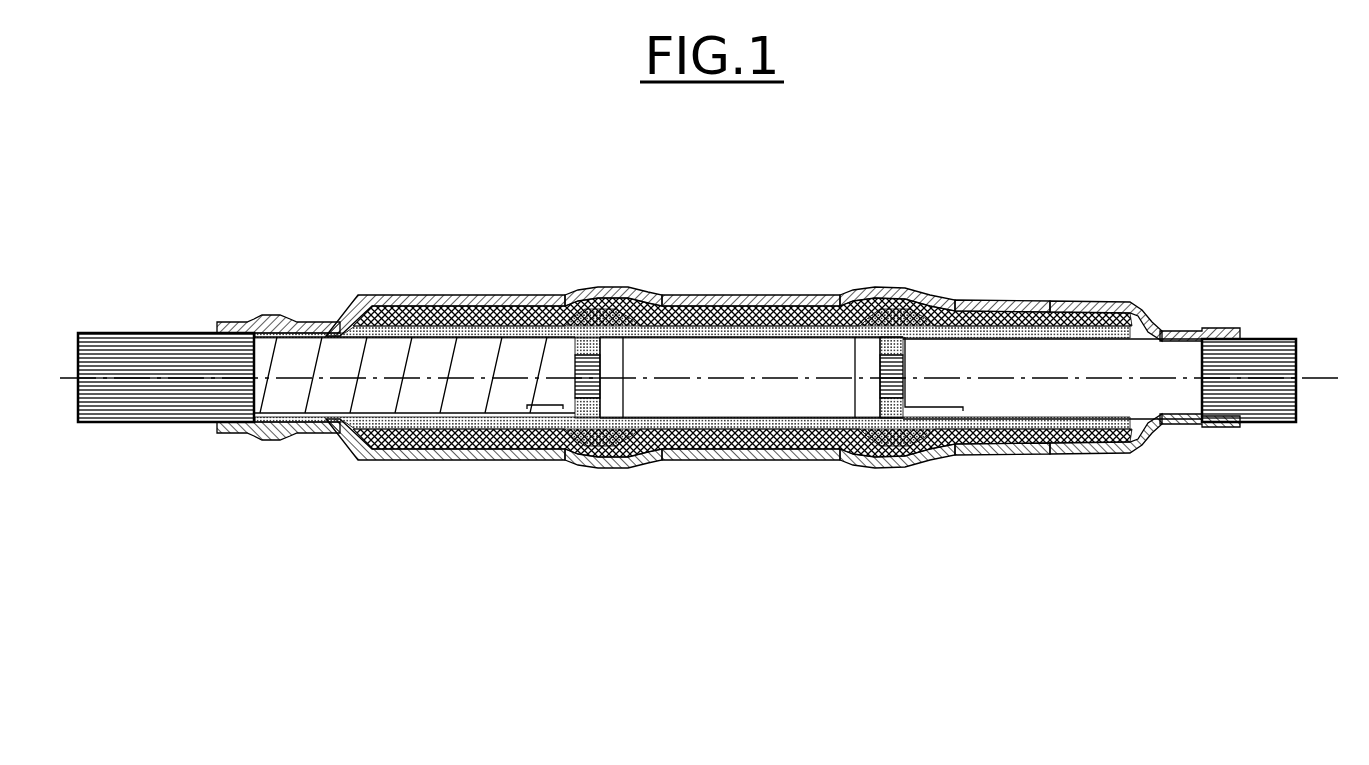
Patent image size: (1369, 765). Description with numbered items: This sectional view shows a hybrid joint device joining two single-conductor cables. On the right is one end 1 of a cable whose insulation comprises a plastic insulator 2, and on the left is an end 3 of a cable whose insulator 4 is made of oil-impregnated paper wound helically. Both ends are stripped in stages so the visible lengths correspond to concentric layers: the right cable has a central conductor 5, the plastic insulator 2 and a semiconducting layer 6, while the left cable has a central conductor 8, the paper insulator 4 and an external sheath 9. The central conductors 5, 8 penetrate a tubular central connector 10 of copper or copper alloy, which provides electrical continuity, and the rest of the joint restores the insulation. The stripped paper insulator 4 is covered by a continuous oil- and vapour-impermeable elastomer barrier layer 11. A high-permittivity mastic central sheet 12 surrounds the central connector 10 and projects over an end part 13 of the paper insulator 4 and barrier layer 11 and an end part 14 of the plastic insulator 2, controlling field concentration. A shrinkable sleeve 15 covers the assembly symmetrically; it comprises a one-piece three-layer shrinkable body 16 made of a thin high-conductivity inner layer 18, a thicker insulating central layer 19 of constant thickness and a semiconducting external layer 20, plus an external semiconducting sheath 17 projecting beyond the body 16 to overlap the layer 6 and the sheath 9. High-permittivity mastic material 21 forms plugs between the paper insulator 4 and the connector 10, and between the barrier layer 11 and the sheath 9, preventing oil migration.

The cable end 1 is at (1284, 306).
The plastic insulator 2 is at (1063, 407).
The cable end 3 is at (135, 302).
The paper insulator 4 is at (435, 407).
The central conductor 5 is at (890, 464).
The semiconducting layer 6 is at (1255, 423).
The central conductor 8 is at (585, 462).
The external sheath 9 is at (152, 392).
The central connector 10 is at (715, 407).
The barrier layer 11 is at (376, 296).
The central sheet 12 is at (752, 296).
The end part 13 is at (524, 405).
The end part 14 is at (940, 407).
The shrinkable sleeve 15 is at (796, 247).
The three-layer shrinkable body 16 is at (813, 294).
The external semiconducting sheath 17 is at (1227, 328).
The high-conductivity elastomer layer 18 is at (923, 297).
The insulating central layer 19 is at (992, 303).
The semiconducting external layer 20 is at (1103, 303).
The high-permittivity mastic material 21 is at (263, 316).